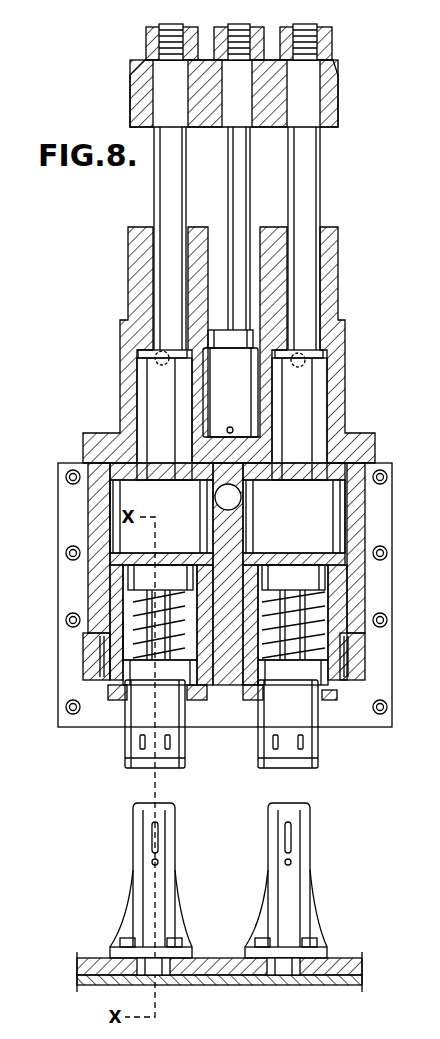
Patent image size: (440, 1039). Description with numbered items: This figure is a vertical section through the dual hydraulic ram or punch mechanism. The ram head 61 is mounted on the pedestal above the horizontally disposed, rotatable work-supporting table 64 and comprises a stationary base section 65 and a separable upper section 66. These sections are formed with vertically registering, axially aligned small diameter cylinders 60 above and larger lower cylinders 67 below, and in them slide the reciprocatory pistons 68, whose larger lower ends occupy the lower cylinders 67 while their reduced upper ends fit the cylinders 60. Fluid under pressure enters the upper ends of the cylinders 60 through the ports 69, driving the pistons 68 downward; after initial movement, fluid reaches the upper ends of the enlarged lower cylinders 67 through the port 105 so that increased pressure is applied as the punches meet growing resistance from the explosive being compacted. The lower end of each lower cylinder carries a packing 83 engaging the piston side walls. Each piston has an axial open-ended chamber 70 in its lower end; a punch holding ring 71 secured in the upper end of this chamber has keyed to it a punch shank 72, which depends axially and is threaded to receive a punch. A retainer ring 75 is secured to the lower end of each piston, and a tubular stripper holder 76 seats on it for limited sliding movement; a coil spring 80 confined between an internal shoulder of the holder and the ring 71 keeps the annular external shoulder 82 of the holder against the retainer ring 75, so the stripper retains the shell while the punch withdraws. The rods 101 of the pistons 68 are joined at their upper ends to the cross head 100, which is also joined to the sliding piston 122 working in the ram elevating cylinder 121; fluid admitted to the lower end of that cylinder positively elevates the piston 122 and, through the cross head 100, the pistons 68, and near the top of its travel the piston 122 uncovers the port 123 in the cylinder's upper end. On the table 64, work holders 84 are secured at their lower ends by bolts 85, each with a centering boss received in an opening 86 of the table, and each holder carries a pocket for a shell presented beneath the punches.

The cross head 100 is at (338, 98).
The rods of the pistons 101 is at (155, 195).
The sliding piston 122 is at (250, 178).
The upper section 66 is at (338, 278).
The port 123 is at (232, 328).
The ram elevating cylinder 121 is at (230, 392).
The small diameter cylinders 60 is at (323, 352).
The ports 69 is at (142, 352).
The ram head 61 is at (377, 461).
The base section 65 is at (365, 540).
The port 105 is at (232, 503).
The reciprocatory pistons 68 is at (227, 516).
The lower cylinders 67 is at (110, 502).
The open-ended chamber 70 is at (122, 590).
The punch holding ring 71 is at (408, 556).
The packing 83 is at (92, 660).
The coil spring 80 is at (130, 628).
The punch shank 72 is at (125, 695).
The annular external shoulder 82 is at (258, 690).
The retainer ring 75 is at (337, 697).
The tubular stripper holder 76 is at (137, 752).
The work holders 84 is at (170, 867).
The bolts 85 is at (130, 937).
The work-supporting table 64 is at (350, 968).
The opening 86 is at (152, 978).